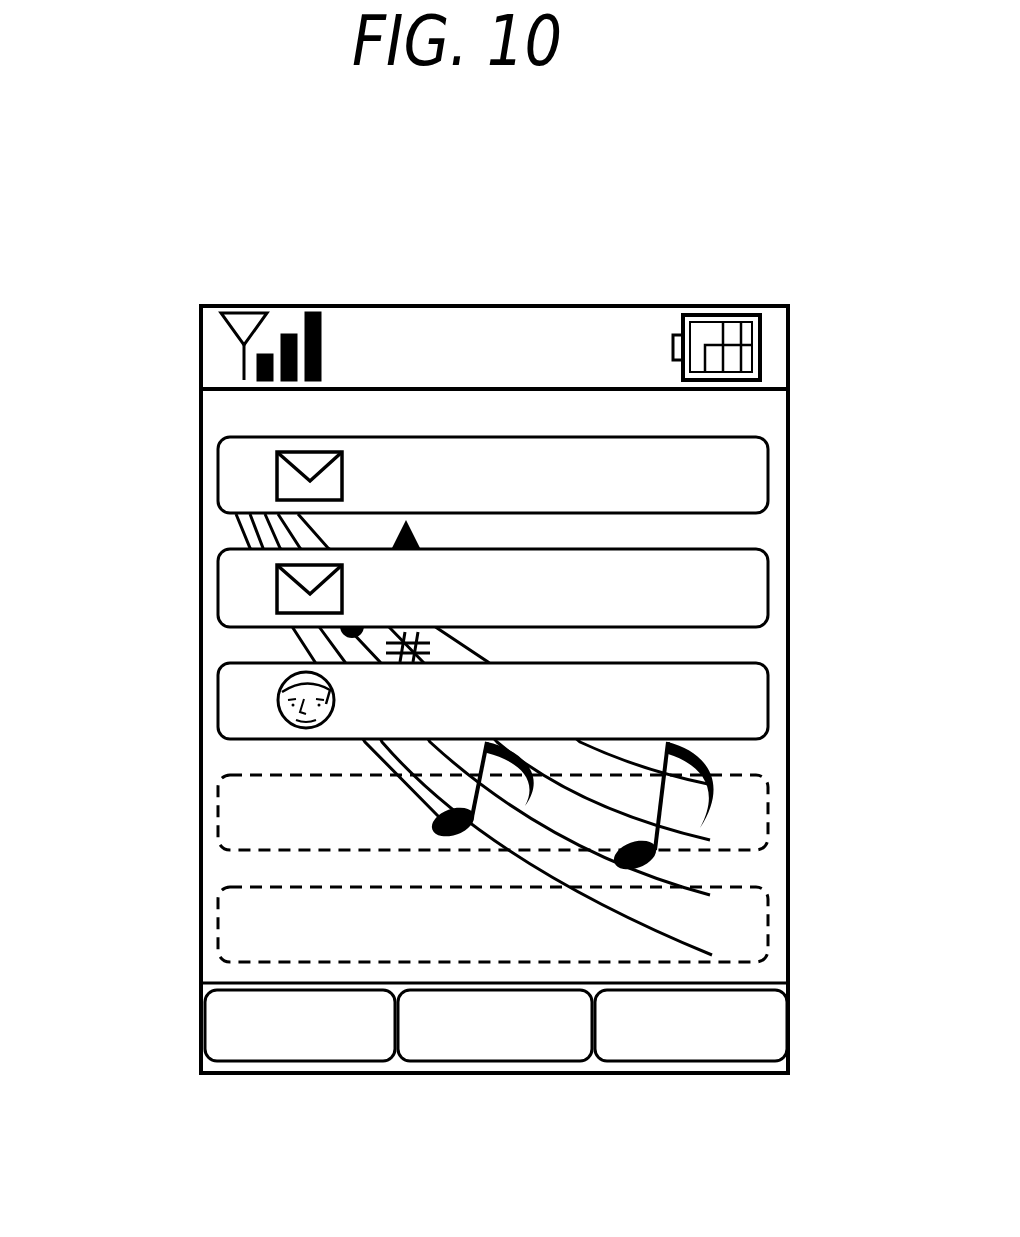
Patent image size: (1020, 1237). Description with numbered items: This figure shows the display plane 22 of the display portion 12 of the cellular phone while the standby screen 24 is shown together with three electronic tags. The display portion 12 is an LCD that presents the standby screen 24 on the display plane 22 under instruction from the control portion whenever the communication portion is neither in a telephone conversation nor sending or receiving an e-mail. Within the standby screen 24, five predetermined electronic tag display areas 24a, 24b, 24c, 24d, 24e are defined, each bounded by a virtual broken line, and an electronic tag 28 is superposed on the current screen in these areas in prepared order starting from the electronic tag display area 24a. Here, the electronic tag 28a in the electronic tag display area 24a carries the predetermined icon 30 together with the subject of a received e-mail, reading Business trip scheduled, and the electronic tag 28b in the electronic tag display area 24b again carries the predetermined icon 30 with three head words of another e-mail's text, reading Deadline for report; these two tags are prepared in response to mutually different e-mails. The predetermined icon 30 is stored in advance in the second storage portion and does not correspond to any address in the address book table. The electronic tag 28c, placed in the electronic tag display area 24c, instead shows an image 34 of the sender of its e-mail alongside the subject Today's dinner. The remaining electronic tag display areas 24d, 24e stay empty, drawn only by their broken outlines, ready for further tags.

The display portion 12 is at (770, 293).
The display plane 22 is at (200, 870).
The standby screen 24 is at (490, 405).
The electronic tag display area 24a is at (768, 472).
The electronic tag display area 24b is at (768, 585).
The electronic tag display area 24c is at (768, 700).
The electronic tag display area 24d is at (770, 812).
The electronic tag display area 24e is at (770, 925).
The electronic tag 28 is at (177, 595).
The electronic tag 28a is at (217, 428).
The electronic tag 28b is at (218, 592).
The electronic tag 28c is at (215, 752).
The predetermined icon 30 is at (305, 452).
The image of the sender 34 is at (298, 733).